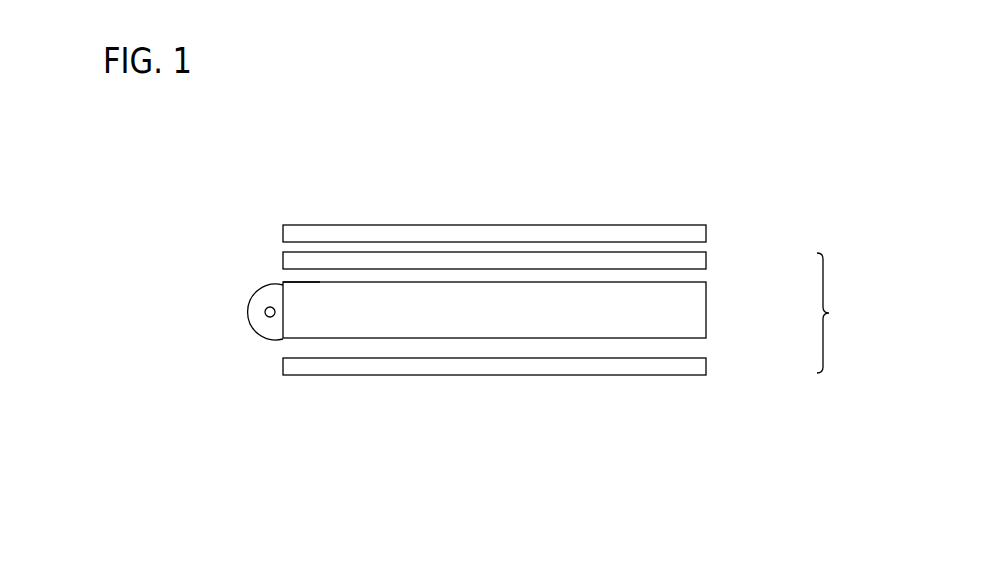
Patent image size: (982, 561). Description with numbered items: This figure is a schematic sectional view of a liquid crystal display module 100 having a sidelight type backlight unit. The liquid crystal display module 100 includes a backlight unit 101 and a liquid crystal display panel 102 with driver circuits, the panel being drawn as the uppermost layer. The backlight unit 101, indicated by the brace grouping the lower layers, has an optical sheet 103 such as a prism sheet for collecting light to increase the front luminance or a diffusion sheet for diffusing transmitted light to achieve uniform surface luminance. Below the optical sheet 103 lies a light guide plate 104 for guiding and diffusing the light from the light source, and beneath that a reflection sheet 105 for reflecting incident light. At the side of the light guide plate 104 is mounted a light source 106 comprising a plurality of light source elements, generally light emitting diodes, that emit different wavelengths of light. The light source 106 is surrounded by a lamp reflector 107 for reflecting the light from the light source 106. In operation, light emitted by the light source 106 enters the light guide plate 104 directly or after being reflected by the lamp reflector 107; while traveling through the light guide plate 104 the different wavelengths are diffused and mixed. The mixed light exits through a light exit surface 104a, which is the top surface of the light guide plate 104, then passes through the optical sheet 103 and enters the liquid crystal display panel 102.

The liquid crystal display module 100 is at (832, 153).
The backlight unit 101 is at (847, 313).
The liquid crystal display panel 102 is at (706, 236).
The optical sheet 103 is at (706, 262).
The light guide plate 104 is at (706, 316).
The light exit surface 104a is at (300, 282).
The reflection sheet 105 is at (706, 370).
The light source 106 is at (265, 308).
The lamp reflector 107 is at (262, 336).